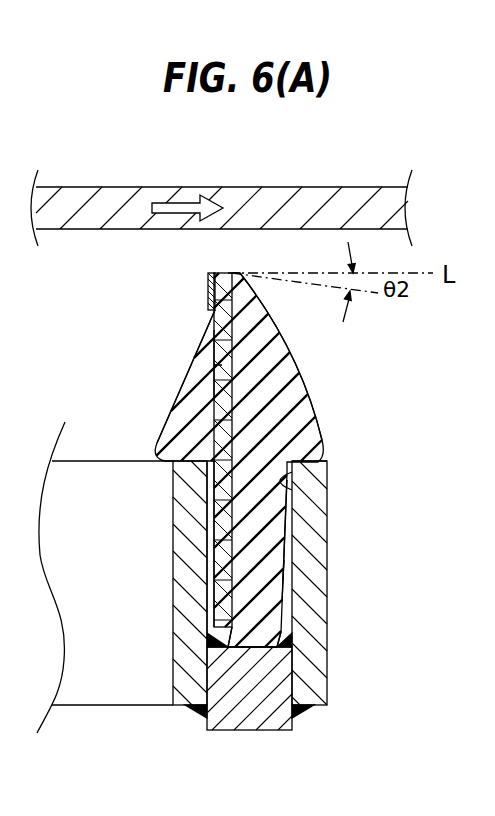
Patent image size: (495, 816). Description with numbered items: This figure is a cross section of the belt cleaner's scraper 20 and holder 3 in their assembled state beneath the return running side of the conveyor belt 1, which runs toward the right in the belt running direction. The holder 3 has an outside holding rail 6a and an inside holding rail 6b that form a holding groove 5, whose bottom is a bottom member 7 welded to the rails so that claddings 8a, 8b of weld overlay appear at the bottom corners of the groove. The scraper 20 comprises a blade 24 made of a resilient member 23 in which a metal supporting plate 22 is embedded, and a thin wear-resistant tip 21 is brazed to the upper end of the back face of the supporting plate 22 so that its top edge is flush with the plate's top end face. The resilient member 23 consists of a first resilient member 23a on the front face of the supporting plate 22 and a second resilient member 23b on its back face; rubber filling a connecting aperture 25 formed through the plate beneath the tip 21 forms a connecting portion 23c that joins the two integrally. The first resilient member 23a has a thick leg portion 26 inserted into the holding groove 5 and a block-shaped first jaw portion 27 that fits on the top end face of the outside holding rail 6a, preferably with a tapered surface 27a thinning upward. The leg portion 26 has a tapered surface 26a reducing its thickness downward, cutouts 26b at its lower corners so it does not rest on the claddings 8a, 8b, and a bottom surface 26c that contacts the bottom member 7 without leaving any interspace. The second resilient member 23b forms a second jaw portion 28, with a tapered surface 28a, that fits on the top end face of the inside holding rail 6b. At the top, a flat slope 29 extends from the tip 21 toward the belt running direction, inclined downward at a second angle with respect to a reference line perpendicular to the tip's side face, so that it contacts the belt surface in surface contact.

The conveyor belt 1 is at (129, 183).
The holder 3 is at (176, 721).
The holding groove 5 is at (327, 469).
The outside holding rail 6a is at (327, 503).
The inside holding rail 6b is at (173, 548).
The bottom member 7 is at (252, 708).
The cladding 8a is at (292, 640).
The cladding 8b is at (207, 640).
The scraper 20 is at (250, 442).
The tip 21 is at (208, 290).
The supporting plate 22 is at (205, 489).
The resilient member 23 is at (198, 352).
The first resilient member 23a is at (297, 521).
The second resilient member 23b is at (130, 376).
The connecting portion 23c is at (225, 362).
The blade 24 is at (240, 442).
The connecting aperture 25 is at (151, 365).
The leg portion 26 is at (278, 560).
The tapered surface 26a is at (283, 571).
The cutout 26b is at (270, 626).
The bottom surface 26c is at (247, 649).
The first jaw portion 27 is at (278, 460).
The tapered surface 27a is at (302, 370).
The second jaw portion 28 is at (130, 385).
The tapered surface 28a is at (130, 376).
The flat slope 29 is at (237, 268).